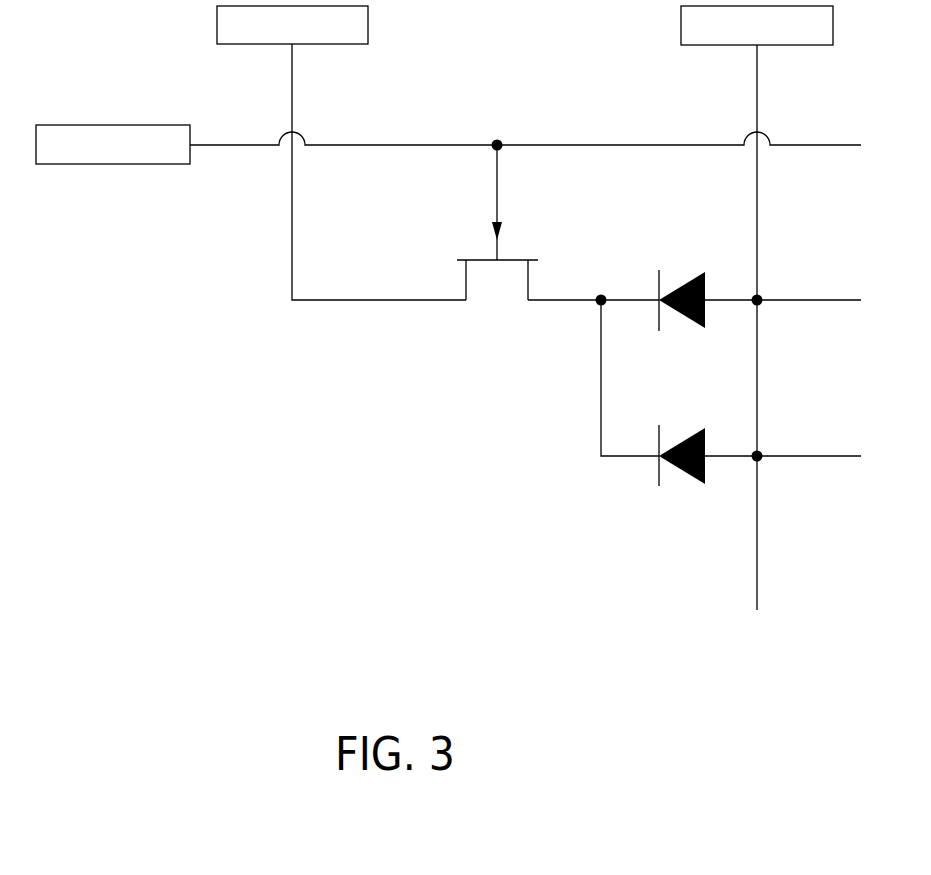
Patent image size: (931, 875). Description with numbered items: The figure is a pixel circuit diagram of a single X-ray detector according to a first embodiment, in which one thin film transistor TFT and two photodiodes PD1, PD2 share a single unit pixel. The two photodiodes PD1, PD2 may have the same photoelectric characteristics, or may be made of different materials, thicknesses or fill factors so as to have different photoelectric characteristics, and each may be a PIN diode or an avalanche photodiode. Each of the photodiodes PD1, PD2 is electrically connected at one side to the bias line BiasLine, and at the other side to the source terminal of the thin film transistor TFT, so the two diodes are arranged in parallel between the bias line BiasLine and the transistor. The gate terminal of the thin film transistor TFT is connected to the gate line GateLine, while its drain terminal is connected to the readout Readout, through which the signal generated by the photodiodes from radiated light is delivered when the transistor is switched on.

The gate line GateLine is at (448, 144).
The readout Readout is at (341, 153).
The bias line BiasLine is at (757, 308).
The thin film transistor TFT is at (529, 243).
The photodiode PD2 is at (729, 278).
The photodiode PD1 is at (731, 414).